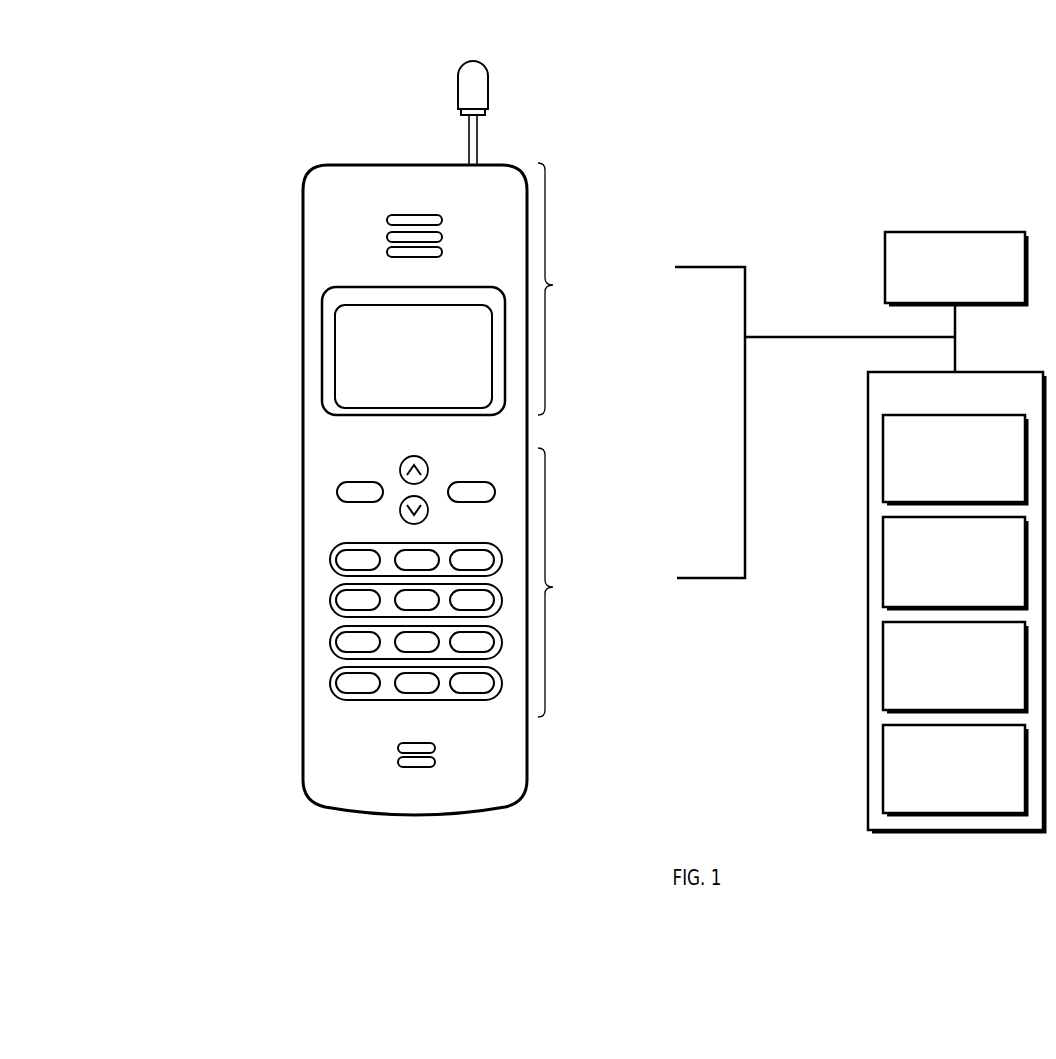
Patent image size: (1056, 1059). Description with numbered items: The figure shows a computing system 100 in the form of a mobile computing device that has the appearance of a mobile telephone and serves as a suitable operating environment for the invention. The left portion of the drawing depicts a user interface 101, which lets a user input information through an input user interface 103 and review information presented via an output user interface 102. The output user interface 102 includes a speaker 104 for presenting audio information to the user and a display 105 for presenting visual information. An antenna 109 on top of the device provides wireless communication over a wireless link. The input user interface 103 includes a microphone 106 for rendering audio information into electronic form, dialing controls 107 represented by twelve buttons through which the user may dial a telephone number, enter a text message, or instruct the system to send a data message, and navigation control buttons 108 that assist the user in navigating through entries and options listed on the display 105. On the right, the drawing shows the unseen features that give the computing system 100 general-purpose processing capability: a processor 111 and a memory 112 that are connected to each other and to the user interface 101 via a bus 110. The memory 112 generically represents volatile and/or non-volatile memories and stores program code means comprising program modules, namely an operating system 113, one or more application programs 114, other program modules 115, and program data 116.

The computing system 100 is at (784, 139).
The user interface 101 is at (302, 820).
The output user interface 102 is at (589, 289).
The input user interface 103 is at (589, 582).
The speaker 104 is at (292, 232).
The display 105 is at (292, 362).
The microphone 106 is at (292, 752).
The dialing controls 107 is at (293, 697).
The navigation control buttons 108 is at (292, 484).
The antenna 109 is at (508, 125).
The bus 110 is at (780, 336).
The processor 111 is at (942, 294).
The memory 112 is at (1003, 404).
The operating system 113 is at (942, 492).
The application programs 114 is at (942, 596).
The other program modules 115 is at (942, 701).
The program data 116 is at (942, 804).